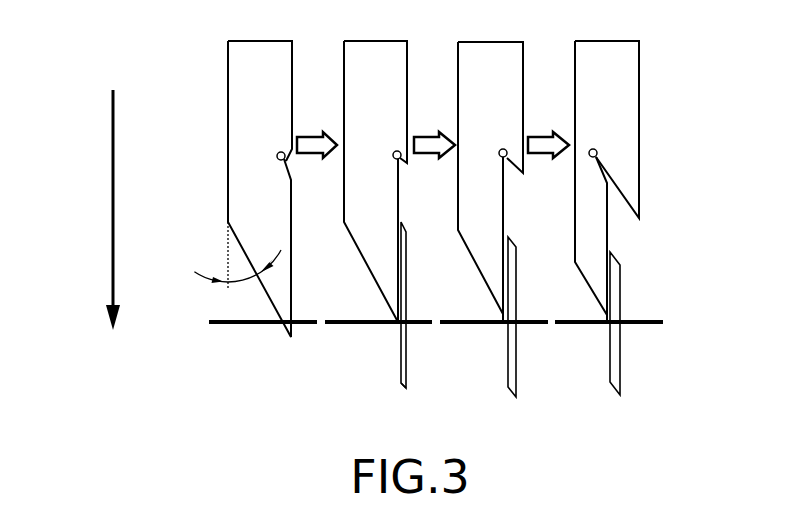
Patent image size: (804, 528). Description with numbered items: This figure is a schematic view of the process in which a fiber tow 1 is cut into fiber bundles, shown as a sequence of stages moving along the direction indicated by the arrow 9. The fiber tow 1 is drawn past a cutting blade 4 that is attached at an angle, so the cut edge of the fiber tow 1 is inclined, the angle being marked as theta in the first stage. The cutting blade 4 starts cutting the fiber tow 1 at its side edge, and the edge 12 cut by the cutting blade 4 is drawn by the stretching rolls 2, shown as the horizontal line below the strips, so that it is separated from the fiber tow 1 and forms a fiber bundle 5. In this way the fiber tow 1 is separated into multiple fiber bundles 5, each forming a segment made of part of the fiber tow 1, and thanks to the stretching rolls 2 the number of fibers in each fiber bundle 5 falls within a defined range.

The fiber tow 1 is at (232, 107).
The stretching rolls 2 is at (240, 325).
The cutting blade 4 is at (595, 150).
The fiber bundle 5 is at (402, 360).
The transport direction 9 is at (113, 187).
The edge 12 is at (403, 390).